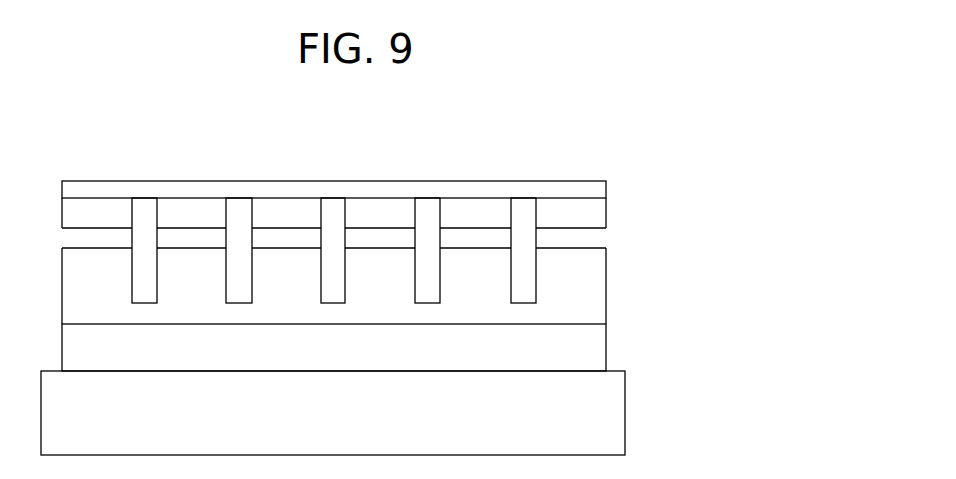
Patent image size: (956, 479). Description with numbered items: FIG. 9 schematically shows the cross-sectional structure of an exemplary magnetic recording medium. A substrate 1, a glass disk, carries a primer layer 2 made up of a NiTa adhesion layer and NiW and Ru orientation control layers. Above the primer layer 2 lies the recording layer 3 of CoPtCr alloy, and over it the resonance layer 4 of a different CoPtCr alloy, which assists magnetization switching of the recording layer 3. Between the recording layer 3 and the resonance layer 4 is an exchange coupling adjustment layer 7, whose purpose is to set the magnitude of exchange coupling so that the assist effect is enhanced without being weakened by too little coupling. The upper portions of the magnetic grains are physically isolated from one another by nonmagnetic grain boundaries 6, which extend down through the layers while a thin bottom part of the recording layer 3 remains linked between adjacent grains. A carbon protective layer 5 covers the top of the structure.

The substrate 1 is at (615, 408).
The primer layer 2 is at (596, 352).
The recording layer 3 is at (596, 283).
The resonance layer 4 is at (596, 218).
The protective layer 5 is at (594, 190).
The nonmagnetic grain boundaries 6 is at (524, 208).
The exchange coupling adjustment layer 7 is at (596, 243).